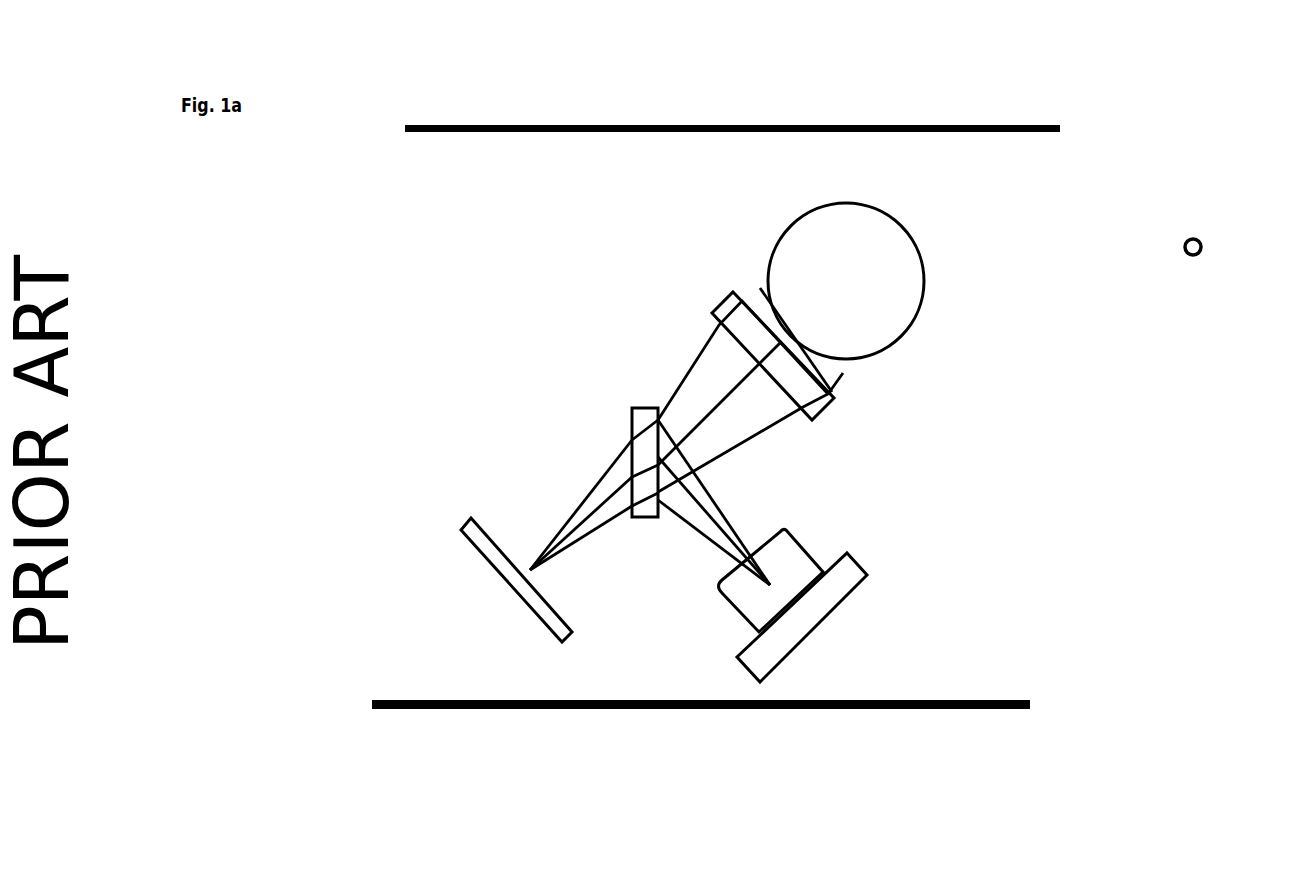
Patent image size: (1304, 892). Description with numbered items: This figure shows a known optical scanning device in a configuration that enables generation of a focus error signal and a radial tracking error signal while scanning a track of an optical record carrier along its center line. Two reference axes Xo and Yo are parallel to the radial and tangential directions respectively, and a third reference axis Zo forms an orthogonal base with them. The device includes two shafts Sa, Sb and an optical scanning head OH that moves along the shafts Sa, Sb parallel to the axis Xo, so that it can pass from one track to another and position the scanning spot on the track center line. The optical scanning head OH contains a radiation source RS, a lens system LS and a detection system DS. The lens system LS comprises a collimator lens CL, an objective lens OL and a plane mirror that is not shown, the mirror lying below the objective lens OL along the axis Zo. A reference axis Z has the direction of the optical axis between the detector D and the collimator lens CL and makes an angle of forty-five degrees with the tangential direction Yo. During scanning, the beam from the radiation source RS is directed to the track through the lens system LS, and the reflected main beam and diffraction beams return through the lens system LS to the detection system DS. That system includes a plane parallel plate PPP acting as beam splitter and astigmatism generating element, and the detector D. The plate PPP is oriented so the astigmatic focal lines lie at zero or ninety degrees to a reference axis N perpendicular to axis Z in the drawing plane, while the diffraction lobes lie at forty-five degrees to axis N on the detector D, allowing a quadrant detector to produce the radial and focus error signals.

The shaft Sa is at (1000, 126).
The shaft Sb is at (967, 708).
The optical scanning head OH is at (550, 283).
The lens system LS is at (1012, 285).
The objective lens OL is at (897, 342).
The collimator lens CL is at (823, 407).
The detection system DS is at (285, 355).
The plane parallel plate PPP is at (630, 420).
The detector D is at (460, 533).
The radiation source RS is at (840, 577).
The reference axis N is at (998, 205).
The reference axis Z is at (998, 205).
The reference axis Yo is at (1193, 238).
The reference axis Xo is at (1202, 247).
The reference axis Zo is at (1187, 263).